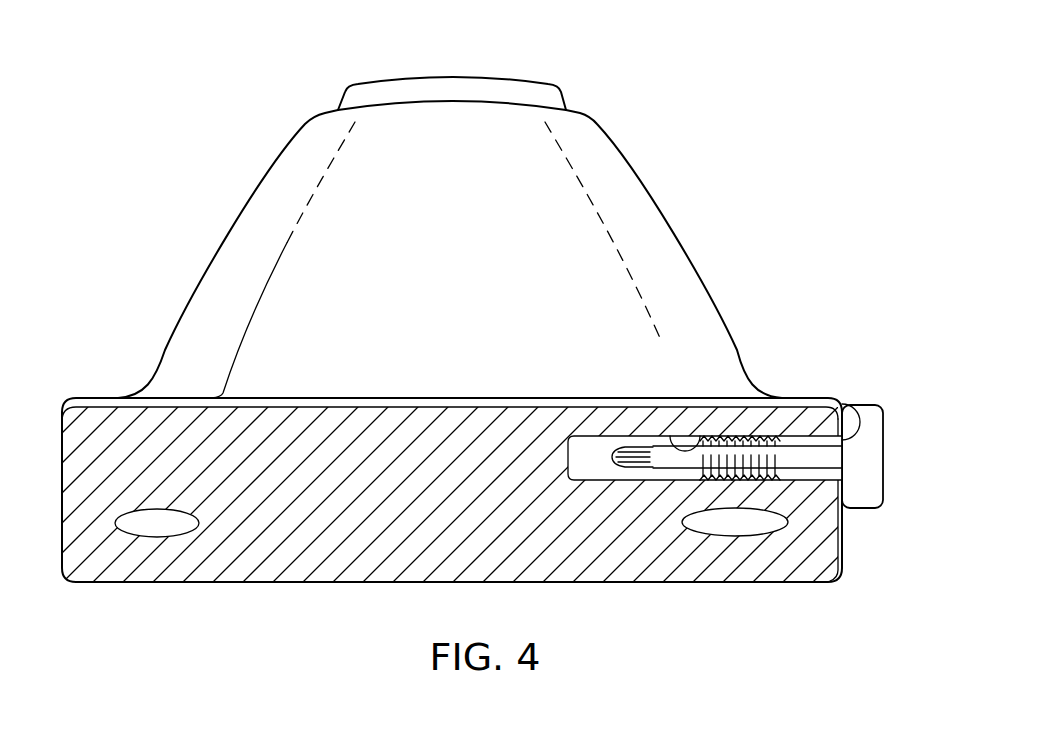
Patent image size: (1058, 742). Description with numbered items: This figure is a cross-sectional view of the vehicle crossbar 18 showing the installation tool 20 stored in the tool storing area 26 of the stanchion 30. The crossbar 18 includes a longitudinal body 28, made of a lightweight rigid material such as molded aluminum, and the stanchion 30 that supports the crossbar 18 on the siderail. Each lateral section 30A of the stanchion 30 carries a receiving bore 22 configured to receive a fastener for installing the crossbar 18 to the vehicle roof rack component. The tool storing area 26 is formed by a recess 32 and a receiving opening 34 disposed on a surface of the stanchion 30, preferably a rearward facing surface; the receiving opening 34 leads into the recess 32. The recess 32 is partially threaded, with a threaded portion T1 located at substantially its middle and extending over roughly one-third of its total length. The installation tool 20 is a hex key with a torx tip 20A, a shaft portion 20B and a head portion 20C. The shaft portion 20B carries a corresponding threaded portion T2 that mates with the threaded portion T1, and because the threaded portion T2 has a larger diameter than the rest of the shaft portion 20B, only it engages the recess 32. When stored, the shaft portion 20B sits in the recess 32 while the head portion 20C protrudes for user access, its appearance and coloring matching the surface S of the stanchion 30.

The vehicle crossbar 18 is at (703, 114).
The installation tool 20 is at (867, 516).
The torx tip 20A is at (624, 449).
The shaft portion 20B is at (703, 478).
The head portion 20C is at (883, 456).
The receiving bores 22 is at (172, 523).
The tool storing area 26 is at (888, 390).
The longitudinal body 28 is at (370, 80).
The stanchion 30 is at (242, 218).
The lateral section 30A is at (92, 397).
The recess 32 is at (598, 477).
The receiving opening 34 is at (853, 408).
The surface S is at (845, 545).
The threaded portion T1 is at (671, 436).
The corresponding threaded portion T2 is at (690, 478).